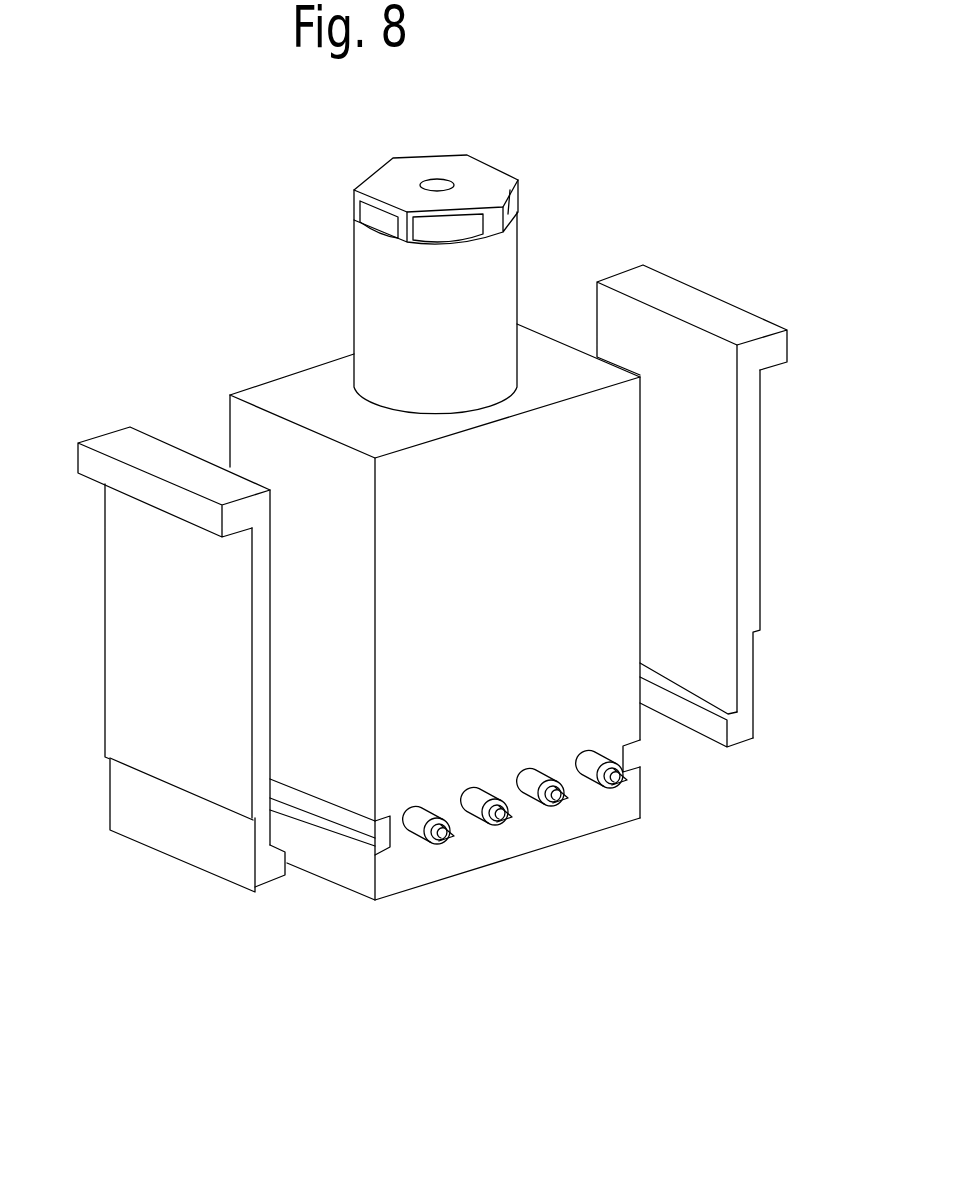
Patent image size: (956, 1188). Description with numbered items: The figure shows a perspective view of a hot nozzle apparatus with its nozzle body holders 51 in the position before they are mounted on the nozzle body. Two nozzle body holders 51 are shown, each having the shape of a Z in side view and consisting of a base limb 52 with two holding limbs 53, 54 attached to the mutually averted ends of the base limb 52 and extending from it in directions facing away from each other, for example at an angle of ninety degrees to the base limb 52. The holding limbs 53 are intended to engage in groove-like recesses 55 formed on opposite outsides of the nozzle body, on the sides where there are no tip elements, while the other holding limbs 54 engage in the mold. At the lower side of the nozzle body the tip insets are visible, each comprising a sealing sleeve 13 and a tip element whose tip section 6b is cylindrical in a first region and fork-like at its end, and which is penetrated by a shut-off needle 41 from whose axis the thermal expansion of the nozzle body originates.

The nozzle body holder 51 is at (447, 541).
The base limb 52 is at (218, 760).
The holding limb 53 is at (737, 728).
The holding limb 54 is at (112, 477).
The groove-like recess 55 is at (632, 753).
The sealing sleeve 13 is at (515, 907).
The shut-off needle 41 is at (457, 840).
The tip section 6b is at (445, 857).